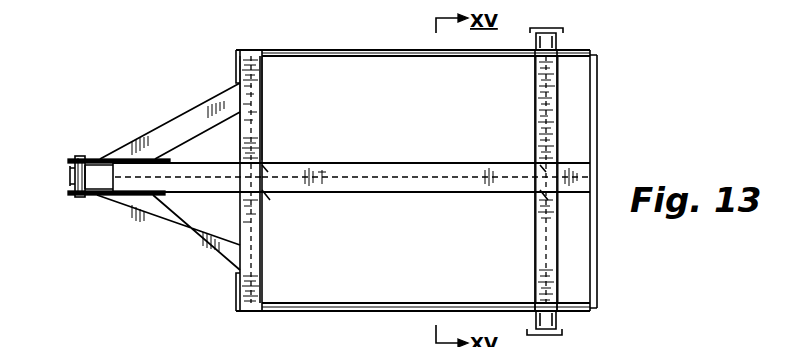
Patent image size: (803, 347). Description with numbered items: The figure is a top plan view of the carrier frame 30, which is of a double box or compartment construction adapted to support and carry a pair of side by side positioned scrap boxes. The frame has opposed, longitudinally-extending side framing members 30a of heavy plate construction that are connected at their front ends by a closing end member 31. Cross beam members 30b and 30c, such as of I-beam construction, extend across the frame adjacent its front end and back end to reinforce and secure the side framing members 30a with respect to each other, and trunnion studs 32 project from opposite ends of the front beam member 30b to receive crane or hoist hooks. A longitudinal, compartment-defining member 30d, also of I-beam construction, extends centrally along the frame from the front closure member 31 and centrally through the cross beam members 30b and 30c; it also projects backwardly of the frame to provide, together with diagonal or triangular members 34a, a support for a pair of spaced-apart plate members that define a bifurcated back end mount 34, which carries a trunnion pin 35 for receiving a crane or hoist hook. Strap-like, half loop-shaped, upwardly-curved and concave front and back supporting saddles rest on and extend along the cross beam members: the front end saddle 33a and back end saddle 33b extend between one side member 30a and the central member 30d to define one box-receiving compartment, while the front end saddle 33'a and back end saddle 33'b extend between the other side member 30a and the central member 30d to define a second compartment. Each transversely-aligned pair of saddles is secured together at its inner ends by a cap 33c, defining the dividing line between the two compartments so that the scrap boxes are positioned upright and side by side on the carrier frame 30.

The carrier frame 30 is at (600, 101).
The side framing members 30a is at (410, 57).
The front cross beam member 30b is at (545, 240).
The back cross beam member 30c is at (264, 237).
The longitudinal compartment-defining member 30d is at (448, 163).
The closing end member 31 is at (597, 277).
The trunnion studs 32 is at (557, 42).
The front end saddle 33a is at (540, 272).
The back end saddle 33b is at (262, 272).
The cap 33c is at (262, 203).
The front end saddle 33'a is at (518, 108).
The back end saddle 33'b is at (281, 108).
The bifurcated back end mount 34 is at (115, 157).
The diagonal members 34a is at (189, 110).
The trunnion pin 35 is at (70, 173).